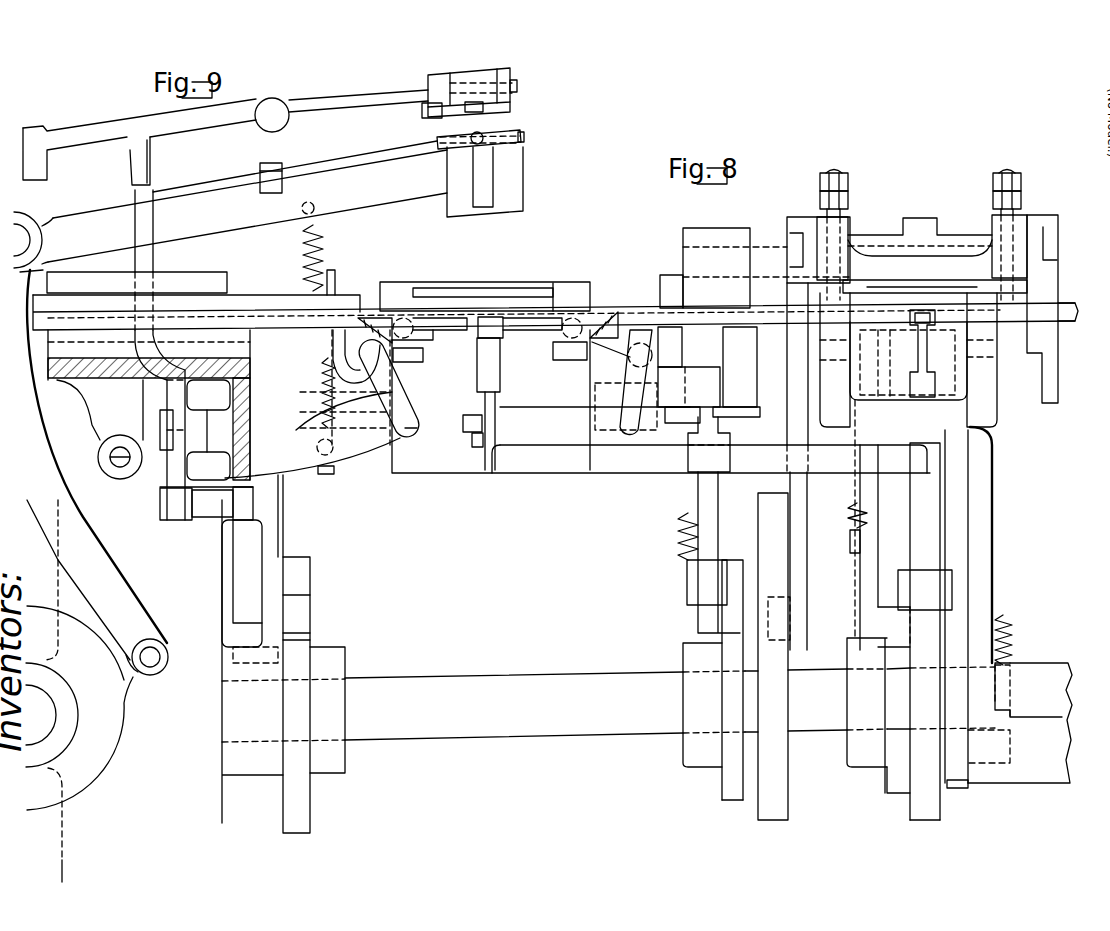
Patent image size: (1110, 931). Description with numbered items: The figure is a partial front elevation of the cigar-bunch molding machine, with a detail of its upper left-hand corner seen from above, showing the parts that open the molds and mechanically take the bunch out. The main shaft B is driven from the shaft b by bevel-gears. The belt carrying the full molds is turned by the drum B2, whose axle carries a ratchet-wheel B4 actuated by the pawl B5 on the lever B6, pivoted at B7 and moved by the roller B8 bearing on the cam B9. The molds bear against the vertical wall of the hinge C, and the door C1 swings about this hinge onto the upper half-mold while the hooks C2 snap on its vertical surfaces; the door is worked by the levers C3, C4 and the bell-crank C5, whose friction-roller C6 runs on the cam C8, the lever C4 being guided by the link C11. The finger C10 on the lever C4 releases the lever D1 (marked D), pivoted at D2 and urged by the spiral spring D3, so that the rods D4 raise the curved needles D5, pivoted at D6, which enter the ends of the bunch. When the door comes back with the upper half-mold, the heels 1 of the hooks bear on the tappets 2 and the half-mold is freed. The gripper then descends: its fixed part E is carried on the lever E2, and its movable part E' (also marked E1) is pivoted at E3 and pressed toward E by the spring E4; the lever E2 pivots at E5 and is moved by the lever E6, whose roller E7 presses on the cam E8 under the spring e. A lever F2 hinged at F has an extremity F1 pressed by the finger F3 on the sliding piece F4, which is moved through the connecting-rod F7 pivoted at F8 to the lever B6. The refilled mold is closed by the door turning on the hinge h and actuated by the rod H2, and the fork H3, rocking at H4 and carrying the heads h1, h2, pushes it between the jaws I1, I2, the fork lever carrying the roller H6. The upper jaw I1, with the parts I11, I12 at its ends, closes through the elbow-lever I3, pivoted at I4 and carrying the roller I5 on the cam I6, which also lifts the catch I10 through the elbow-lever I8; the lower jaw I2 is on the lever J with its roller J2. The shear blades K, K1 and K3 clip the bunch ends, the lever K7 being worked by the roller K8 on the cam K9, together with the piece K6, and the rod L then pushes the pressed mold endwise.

In FIG. 8, the shaft B is at (79, 744).
In FIG. 8, the drum B2 is at (425, 475).
In FIG. 8, the ratchet-wheel B4 is at (330, 476).
In FIG. 8, the pawl B5 is at (327, 289).
In FIG. 8, the lever B6 is at (285, 540).
In FIG. 8, the pivot B7 is at (252, 616).
In FIG. 8, the roller B8 is at (312, 619).
In FIG. 8, the cam B9 is at (300, 801).
In FIG. 8, the shaft b is at (670, 703).
In FIG. 8, the hinge C is at (492, 290).
In FIG. 8, the door C1 is at (580, 290).
In FIG. 8, the hooks C2 is at (370, 316).
In FIG. 8, the lever C3 is at (500, 372).
In FIG. 8, the lever C4 is at (709, 440).
In FIG. 8, the bell-crank C5 is at (698, 615).
In FIG. 8, the friction-roller C6 is at (730, 610).
In FIG. 8, the cam C8 is at (727, 787).
In FIG. 8, the finger C10 is at (483, 425).
In FIG. 8, the link C11 is at (735, 418).
In FIG. 8, the lever D is at (475, 441).
In FIG. 8, the lever D1 is at (417, 428).
In FIG. 8, the pivot D2 is at (117, 468).
In FIG. 8, the spiral spring D3 is at (333, 455).
In FIG. 8, the rods D4 is at (418, 393).
In FIG. 8, the curved needles D5 is at (336, 360).
In FIG. 8, the pivots D6 is at (400, 375).
In FIG. 9, the gripper part E is at (474, 99).
In FIG. 9, the movable gripper part E' is at (431, 120).
In FIG. 9, the movable gripper part E1 is at (508, 110).
In FIG. 9, the lever E2 is at (78, 140).
In FIG. 9, the pivot E3 is at (517, 87).
In FIG. 9, the spring E4 is at (483, 103).
In FIG. 9, the pivot E5 is at (29, 242).
In FIG. 8, the pivot E5 is at (173, 395).
In FIG. 8, the lever E6 is at (202, 418).
In FIG. 8, the friction-roller E7 is at (170, 658).
In FIG. 8, the cam E8 is at (126, 662).
In FIG. 9, the spring e is at (324, 260).
In FIG. 9, the hinge F is at (276, 99).
In FIG. 9, the lever extremity F1 is at (140, 165).
In FIG. 9, the lever F2 is at (417, 100).
In FIG. 9, the finger F3 is at (155, 258).
In FIG. 9, the sliding piece F4 is at (97, 282).
In FIG. 8, the connecting-rod F7 is at (220, 513).
In FIG. 8, the pivot F8 is at (246, 525).
In FIG. 8, the rod H2 is at (970, 698).
In FIG. 8, the fork H3 is at (992, 550).
In FIG. 8, the rocking axis H4 is at (1010, 748).
In FIG. 8, the friction-roller H6 is at (968, 784).
In FIG. 8, the hinge h is at (937, 287).
In FIG. 8, the head h1 is at (993, 360).
In FIG. 8, the head h2 is at (835, 360).
In FIG. 8, the upper jaw I1 is at (930, 225).
In FIG. 8, the lower jaw I2 is at (911, 361).
In FIG. 8, the elbow-lever I3 is at (870, 486).
In FIG. 8, the pivot shaft I4 is at (755, 268).
In FIG. 8, the friction-roller I5 is at (892, 620).
In FIG. 8, the cam I6 is at (893, 700).
In FIG. 8, the elbow-lever I8 is at (887, 365).
In FIG. 8, the movable catch I10 is at (942, 353).
In FIG. 8, the block I11 is at (845, 253).
In FIG. 8, the block I12 is at (1025, 248).
In FIG. 8, the lever J is at (939, 625).
In FIG. 8, the friction-roller J2 is at (930, 610).
In FIG. 8, the shear blade K is at (1060, 236).
In FIG. 8, the shear blade K1 is at (787, 228).
In FIG. 8, the shear blade K3 is at (788, 362).
In FIG. 8, the shaft K6 is at (1053, 331).
In FIG. 8, the lever K7 is at (800, 545).
In FIG. 8, the friction-roller K8 is at (782, 620).
In FIG. 8, the cam K9 is at (790, 787).
In FIG. 8, the rod L is at (670, 283).
In FIG. 8, the heels 1 is at (420, 340).
In FIG. 8, the tappets 2 is at (422, 355).